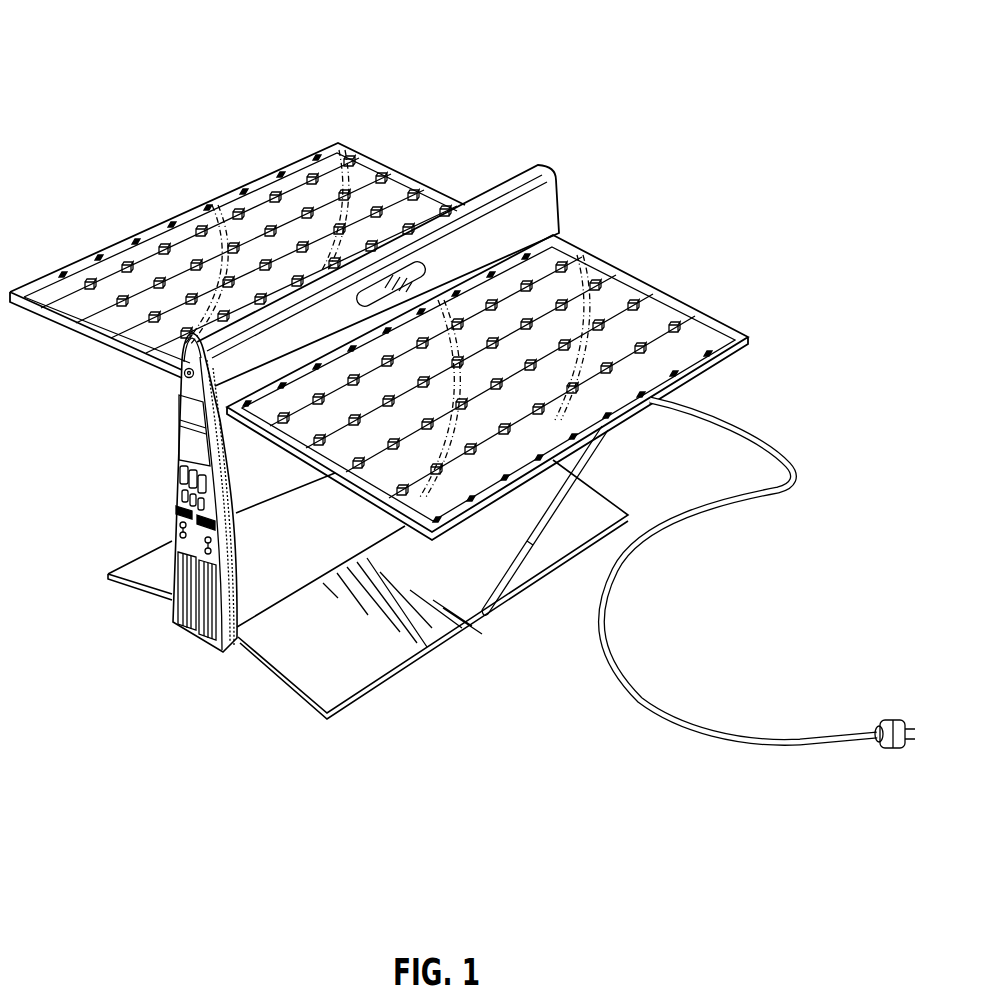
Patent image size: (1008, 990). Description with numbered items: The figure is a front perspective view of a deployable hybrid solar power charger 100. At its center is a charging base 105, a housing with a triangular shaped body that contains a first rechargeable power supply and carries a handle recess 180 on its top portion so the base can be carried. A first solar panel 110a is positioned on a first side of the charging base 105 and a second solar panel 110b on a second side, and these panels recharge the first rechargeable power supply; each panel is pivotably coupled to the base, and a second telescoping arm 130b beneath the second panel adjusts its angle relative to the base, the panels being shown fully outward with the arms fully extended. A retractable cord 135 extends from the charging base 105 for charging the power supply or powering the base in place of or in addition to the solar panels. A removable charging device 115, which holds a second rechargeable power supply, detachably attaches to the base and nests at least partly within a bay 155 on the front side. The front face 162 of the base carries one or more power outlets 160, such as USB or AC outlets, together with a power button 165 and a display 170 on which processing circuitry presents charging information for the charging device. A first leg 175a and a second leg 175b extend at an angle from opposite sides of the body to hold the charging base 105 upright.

The deployable hybrid solar power charger 100 is at (286, 48).
The charging base 105 is at (552, 162).
The first solar panel 110a is at (404, 168).
The second solar panel 110b is at (650, 278).
The charging device 115 is at (182, 582).
The second telescoping arm 130b is at (596, 464).
The retractable cord 135 is at (660, 704).
The bay 155 is at (190, 642).
The power outlets 160 is at (164, 485).
The front face 162 is at (178, 366).
The power button 165 is at (184, 376).
The display 170 is at (182, 432).
The first leg 175a is at (108, 577).
The second leg 175b is at (390, 672).
The handle recess 180 is at (410, 268).